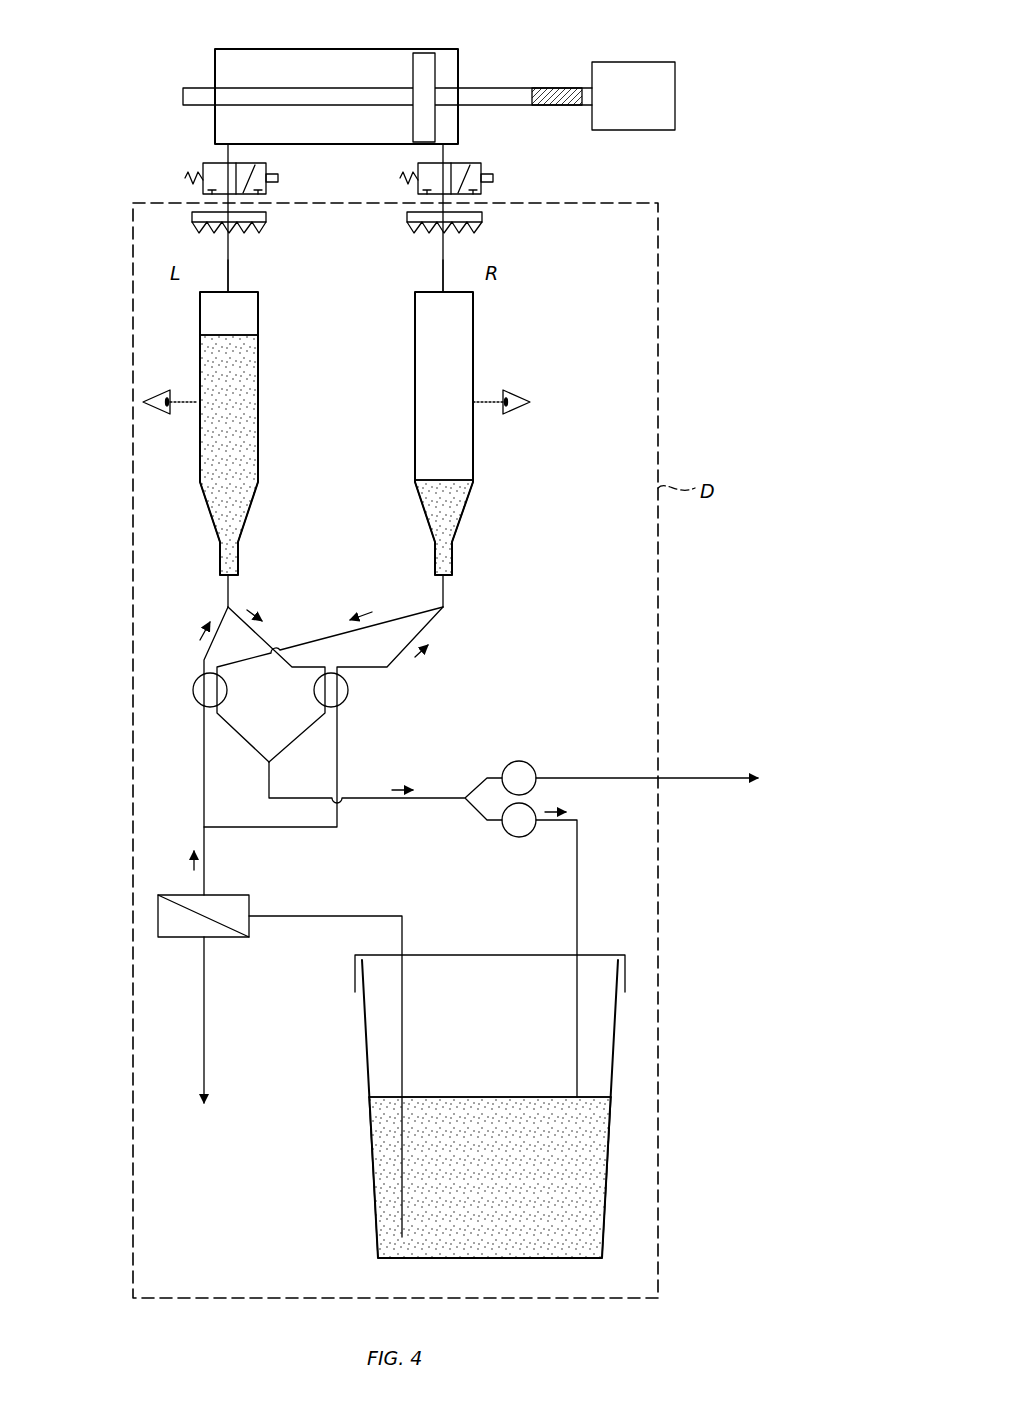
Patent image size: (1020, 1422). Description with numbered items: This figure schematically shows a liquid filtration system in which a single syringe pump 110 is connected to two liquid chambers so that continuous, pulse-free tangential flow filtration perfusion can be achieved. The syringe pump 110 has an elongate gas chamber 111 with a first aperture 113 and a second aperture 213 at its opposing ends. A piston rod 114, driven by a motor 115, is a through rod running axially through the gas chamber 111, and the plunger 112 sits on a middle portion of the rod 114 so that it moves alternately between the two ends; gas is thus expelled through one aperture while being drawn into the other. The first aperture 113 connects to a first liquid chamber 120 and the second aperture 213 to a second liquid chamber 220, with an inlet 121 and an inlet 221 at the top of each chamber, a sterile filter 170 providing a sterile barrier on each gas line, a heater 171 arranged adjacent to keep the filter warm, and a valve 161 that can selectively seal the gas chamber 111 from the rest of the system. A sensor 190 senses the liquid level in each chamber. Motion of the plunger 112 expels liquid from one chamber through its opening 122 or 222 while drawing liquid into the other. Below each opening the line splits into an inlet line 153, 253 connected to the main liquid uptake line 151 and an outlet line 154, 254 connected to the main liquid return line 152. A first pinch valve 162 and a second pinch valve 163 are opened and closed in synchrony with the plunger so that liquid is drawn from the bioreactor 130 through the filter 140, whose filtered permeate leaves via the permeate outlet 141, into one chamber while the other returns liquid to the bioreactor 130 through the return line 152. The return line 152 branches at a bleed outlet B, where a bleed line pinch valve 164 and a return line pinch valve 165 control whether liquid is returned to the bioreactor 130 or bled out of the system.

The syringe pump 110 is at (362, 48).
The gas chamber 111 is at (233, 60).
The plunger 112 is at (424, 60).
The first aperture 113 is at (228, 138).
The piston rod 114 is at (303, 95).
The motor 115 is at (677, 75).
The first liquid chamber 120 is at (259, 306).
The left container inlet 121 is at (230, 290).
The opening 122 is at (227, 580).
The bioreactor 130 is at (366, 1060).
The filter 140 is at (158, 912).
The permeate outlet 141 is at (203, 1034).
The main liquid uptake line 151 is at (297, 918).
The main liquid return line 152 is at (405, 800).
The inlet line 153 is at (204, 667).
The outlet line 154 is at (245, 613).
The valve 161 is at (494, 180).
The first pinch valve 162 is at (193, 690).
The second pinch valve 163 is at (348, 690).
The bleed line pinch valve 164 is at (519, 760).
The return line pinch valve 165 is at (505, 834).
The sterile filter 170 is at (483, 230).
The heater 171 is at (270, 230).
The sensor 190 is at (518, 392).
The second aperture 213 is at (443, 140).
The second liquid chamber 220 is at (474, 468).
The right container inlet 221 is at (440, 290).
The opening 222 is at (450, 583).
The inlet line 253 is at (440, 630).
The outlet line 254 is at (397, 612).